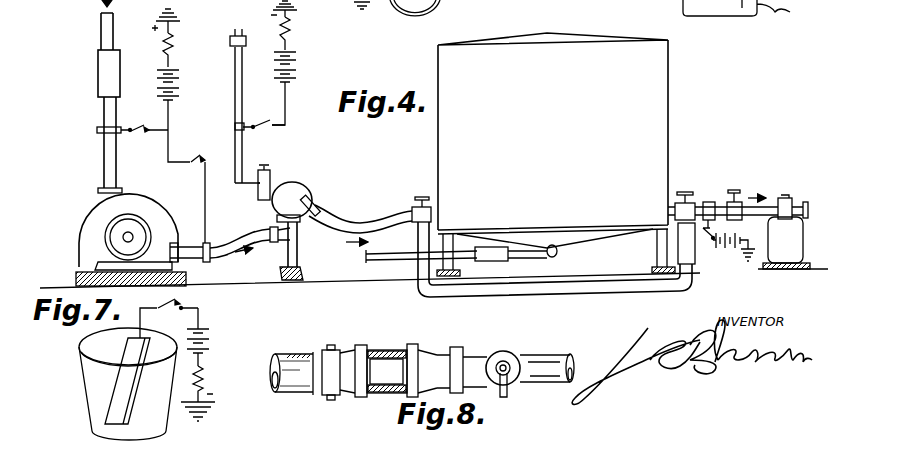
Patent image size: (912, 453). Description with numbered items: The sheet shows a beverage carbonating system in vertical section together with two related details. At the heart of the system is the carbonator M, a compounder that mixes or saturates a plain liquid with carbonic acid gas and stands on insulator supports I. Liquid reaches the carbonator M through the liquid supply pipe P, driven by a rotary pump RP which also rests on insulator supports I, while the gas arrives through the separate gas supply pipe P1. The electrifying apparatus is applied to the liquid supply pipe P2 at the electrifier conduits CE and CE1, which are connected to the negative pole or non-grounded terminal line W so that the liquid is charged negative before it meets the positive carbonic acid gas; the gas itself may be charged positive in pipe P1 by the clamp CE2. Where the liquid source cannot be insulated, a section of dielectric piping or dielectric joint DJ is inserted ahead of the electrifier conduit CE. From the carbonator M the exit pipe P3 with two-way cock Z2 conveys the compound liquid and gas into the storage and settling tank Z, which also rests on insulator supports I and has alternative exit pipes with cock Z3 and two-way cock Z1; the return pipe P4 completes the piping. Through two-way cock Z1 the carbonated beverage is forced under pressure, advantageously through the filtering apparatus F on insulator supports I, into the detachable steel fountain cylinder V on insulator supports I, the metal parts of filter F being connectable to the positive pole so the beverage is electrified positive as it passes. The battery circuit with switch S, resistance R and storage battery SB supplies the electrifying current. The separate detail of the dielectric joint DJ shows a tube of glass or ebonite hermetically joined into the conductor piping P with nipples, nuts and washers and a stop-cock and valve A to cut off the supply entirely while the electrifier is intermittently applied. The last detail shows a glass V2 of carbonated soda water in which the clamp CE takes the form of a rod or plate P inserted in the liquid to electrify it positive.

In FIG. 4, the rotary pump RP is at (86, 232).
In FIG. 4, the liquid supply pipe P is at (104, 164).
In FIG. 8, the liquid supply pipe P is at (288, 360).
In FIG. 4, the gas supply pipe P1 is at (235, 95).
In FIG. 4, the liquid supply pipe P2 is at (235, 240).
In FIG. 4, the exit pipe P3 is at (368, 223).
In FIG. 4, the pipe P4 is at (540, 292).
In FIG. 4, the dielectric joint DJ is at (108, 78).
In FIG. 8, the dielectric joint DJ is at (367, 350).
In FIG. 4, the electrifier conduit CE is at (97, 130).
In FIG. 7, the electrifier conduit CE is at (128, 341).
In FIG. 4, the electrifier conduit CE1 is at (212, 260).
In FIG. 4, the clamp CE2 is at (244, 130).
In FIG. 4, the non-grounded terminal line W is at (205, 226).
In FIG. 4, the switch S is at (143, 125).
In FIG. 7, the switch S is at (180, 306).
In FIG. 4, the resistance R is at (176, 42).
In FIG. 7, the resistance R is at (206, 380).
In FIG. 4, the storage battery SB is at (180, 85).
In FIG. 7, the storage battery SB is at (210, 343).
In FIG. 4, the carbonator M is at (290, 190).
In FIG. 4, the storage and settling tank Z is at (556, 154).
In FIG. 4, the two-way cock Z1 is at (674, 208).
In FIG. 4, the two-way cock Z2 is at (438, 212).
In FIG. 4, the cock Z3 is at (558, 250).
In FIG. 4, the insulator supports I is at (185, 283).
In FIG. 4, the filtering apparatus F is at (708, 202).
In FIG. 4, the detachable steel fountain cylinder V is at (786, 232).
In FIG. 7, the glass V2 is at (86, 386).
In FIG. 8, the stop-cock and valve A is at (508, 395).